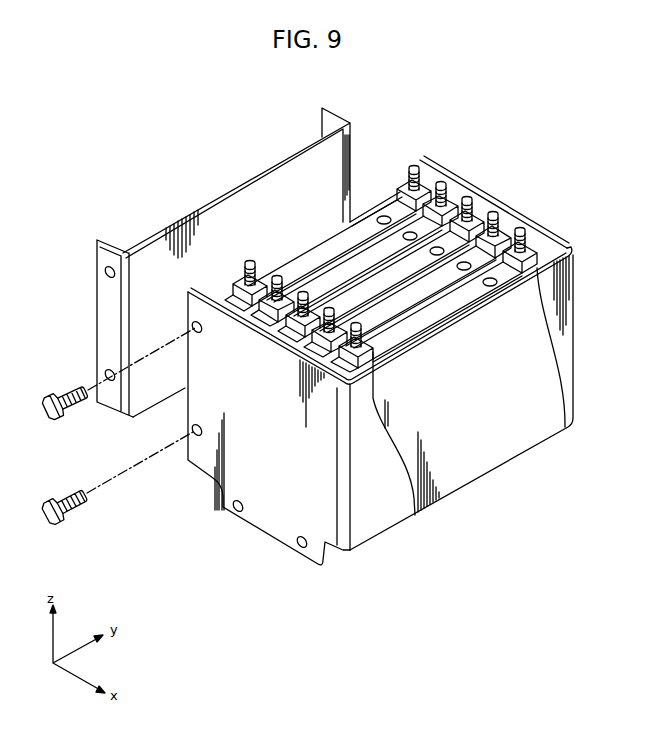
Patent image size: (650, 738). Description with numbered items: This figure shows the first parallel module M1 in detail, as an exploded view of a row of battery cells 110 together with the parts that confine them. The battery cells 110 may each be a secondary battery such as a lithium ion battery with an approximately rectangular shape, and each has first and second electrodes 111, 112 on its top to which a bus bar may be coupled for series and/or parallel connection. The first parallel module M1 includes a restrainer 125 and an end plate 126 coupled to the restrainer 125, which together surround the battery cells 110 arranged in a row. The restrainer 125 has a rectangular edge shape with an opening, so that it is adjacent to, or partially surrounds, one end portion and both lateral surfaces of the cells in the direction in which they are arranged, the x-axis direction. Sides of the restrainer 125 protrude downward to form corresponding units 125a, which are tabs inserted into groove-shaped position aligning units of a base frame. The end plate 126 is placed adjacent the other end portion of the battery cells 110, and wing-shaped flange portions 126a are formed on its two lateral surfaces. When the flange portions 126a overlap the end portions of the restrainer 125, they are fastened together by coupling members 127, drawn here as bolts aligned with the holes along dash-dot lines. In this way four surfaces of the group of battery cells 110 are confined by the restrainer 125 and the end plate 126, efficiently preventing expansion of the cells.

The battery cell 110 is at (560, 248).
The first electrode 111 is at (565, 430).
The second electrode 112 is at (415, 517).
The restrainer 125 is at (346, 436).
The corresponding unit 125a is at (262, 531).
The end plate 126 is at (193, 262).
The flange portion 126a is at (102, 250).
The coupling member 127 is at (68, 390).
The first parallel module M1 is at (190, 497).